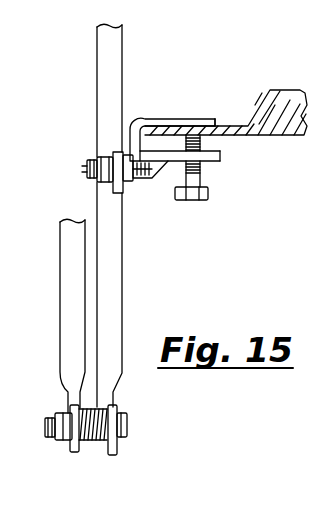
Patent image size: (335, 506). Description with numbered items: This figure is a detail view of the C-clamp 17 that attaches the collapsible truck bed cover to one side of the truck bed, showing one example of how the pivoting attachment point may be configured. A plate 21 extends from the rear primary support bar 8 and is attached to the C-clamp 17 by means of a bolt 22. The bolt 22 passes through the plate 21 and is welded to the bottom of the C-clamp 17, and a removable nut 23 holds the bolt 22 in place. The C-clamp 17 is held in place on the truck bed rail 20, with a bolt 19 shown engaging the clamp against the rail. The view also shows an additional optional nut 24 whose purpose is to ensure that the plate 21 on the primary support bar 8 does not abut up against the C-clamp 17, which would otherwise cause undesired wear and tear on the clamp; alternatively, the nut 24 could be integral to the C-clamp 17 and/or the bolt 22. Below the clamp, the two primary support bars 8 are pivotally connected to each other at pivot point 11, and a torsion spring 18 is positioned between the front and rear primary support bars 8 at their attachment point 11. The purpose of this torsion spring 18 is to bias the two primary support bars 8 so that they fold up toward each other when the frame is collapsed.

The primary support bar 8 is at (73, 278).
The pivot point 11 is at (133, 444).
The C-clamp 17 is at (177, 123).
The torsion spring 18 is at (98, 441).
The clamping bolt 19 is at (196, 172).
The truck bed rail 20 is at (237, 129).
The plate 21 is at (120, 157).
The bolt 22 is at (87, 168).
The removable nut 23 is at (103, 181).
The optional nut 24 is at (126, 178).